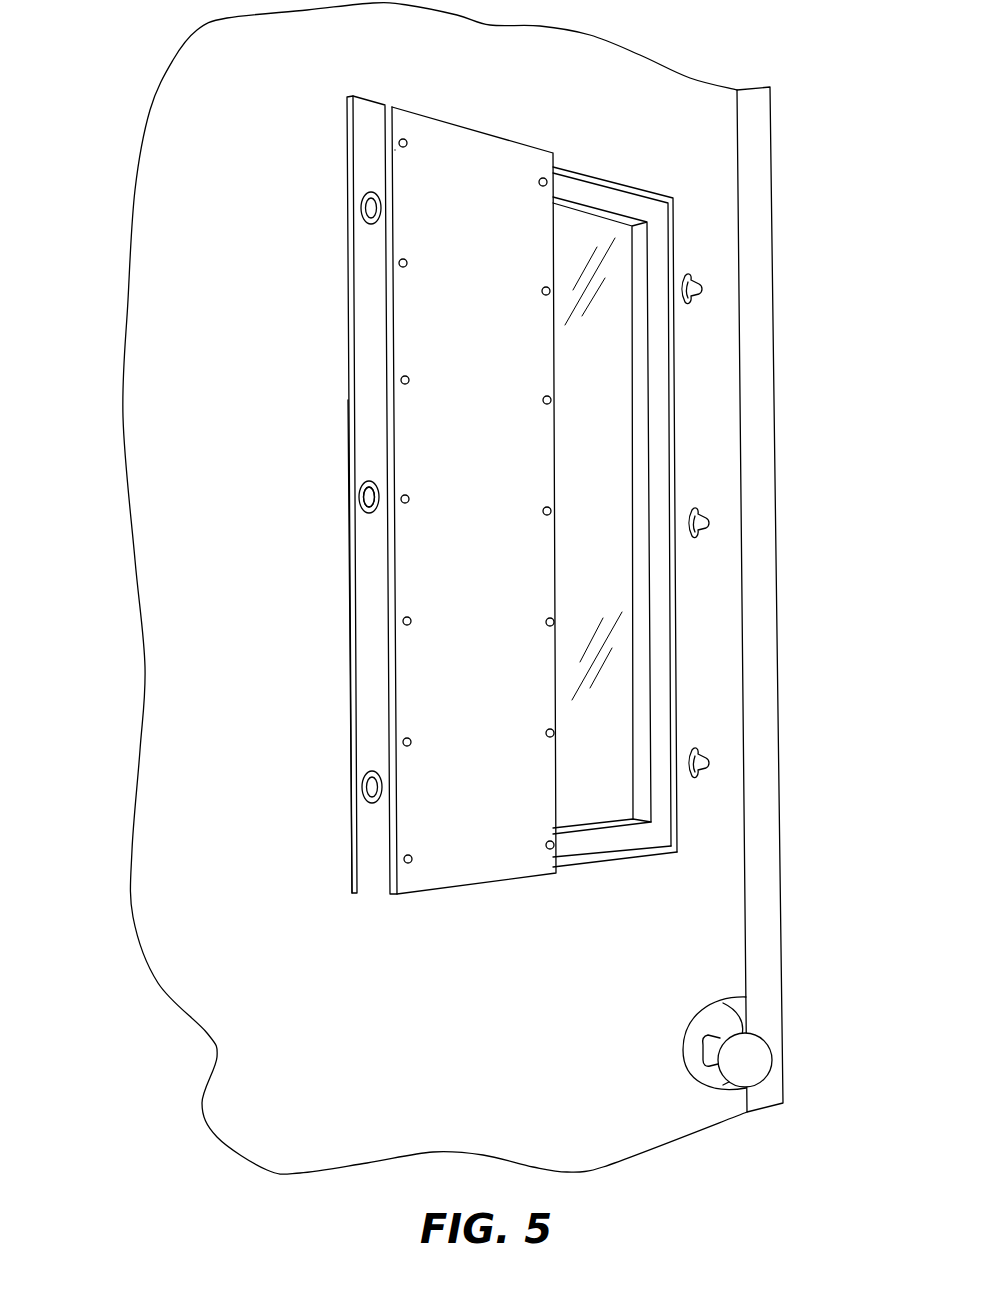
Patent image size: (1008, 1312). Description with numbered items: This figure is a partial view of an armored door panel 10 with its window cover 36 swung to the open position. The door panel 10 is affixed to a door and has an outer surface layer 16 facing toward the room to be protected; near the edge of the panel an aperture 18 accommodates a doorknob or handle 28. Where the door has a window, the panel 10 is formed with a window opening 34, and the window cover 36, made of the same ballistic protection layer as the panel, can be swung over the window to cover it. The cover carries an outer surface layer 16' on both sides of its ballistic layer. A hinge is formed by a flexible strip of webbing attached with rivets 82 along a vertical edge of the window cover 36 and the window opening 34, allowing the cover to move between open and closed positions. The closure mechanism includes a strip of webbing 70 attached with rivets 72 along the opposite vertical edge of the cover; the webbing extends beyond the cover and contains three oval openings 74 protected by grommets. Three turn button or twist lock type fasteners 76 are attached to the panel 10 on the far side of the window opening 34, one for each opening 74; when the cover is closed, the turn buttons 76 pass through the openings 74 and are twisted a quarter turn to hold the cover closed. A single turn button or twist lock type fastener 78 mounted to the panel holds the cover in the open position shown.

The armored door panel 10 is at (213, 93).
The outer surface layer 16 is at (435, 589).
The outer surface layer 16' is at (451, 495).
The aperture 18 is at (733, 1007).
The doorknob or handle 28 is at (760, 1063).
The window opening 34 is at (680, 392).
The window cover 36 is at (442, 338).
The strip of webbing 70 is at (375, 658).
The rivets 72 is at (412, 856).
The oval openings 74 is at (361, 215).
The turn button or twist lock type fastener 76 is at (703, 285).
The turn button or twist lock type fastener 78 is at (360, 489).
The rivets 82 is at (544, 397).